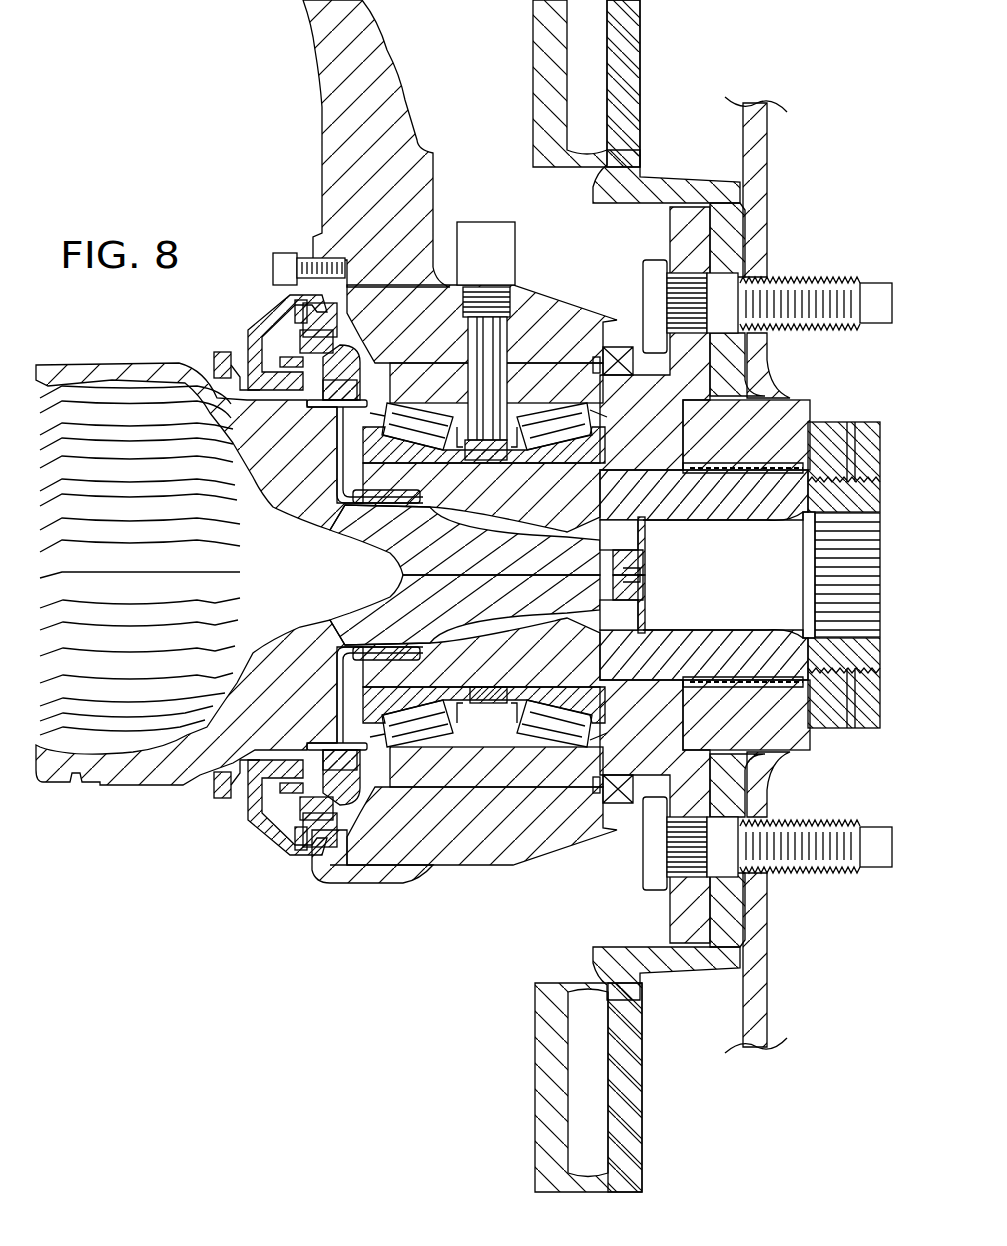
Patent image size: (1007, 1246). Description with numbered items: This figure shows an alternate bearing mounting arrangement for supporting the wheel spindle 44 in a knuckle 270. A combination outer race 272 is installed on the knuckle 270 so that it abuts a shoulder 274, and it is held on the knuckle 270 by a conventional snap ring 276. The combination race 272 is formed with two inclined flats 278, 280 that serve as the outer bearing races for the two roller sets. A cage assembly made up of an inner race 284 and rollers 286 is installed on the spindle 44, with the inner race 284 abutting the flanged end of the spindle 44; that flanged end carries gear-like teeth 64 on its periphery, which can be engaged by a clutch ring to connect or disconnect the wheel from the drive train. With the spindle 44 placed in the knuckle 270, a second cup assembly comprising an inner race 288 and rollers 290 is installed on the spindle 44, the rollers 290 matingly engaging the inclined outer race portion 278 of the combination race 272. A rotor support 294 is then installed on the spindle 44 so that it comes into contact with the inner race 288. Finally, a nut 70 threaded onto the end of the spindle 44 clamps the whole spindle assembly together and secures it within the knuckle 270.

The spindle 44 is at (511, 491).
The gear like teeth 64 is at (378, 447).
The nut 70 is at (875, 442).
The knuckle 270 is at (322, 60).
The combination outer race 272 is at (433, 367).
The shoulder 274 is at (430, 787).
The snap ring 276 is at (603, 348).
The inclined flat 278 is at (540, 408).
The inclined flat 280 is at (393, 363).
The inner race 284 is at (413, 453).
The rollers 286 is at (388, 420).
The inner race 288 is at (578, 452).
The rollers 290 is at (598, 425).
The rotor support 294 is at (800, 415).